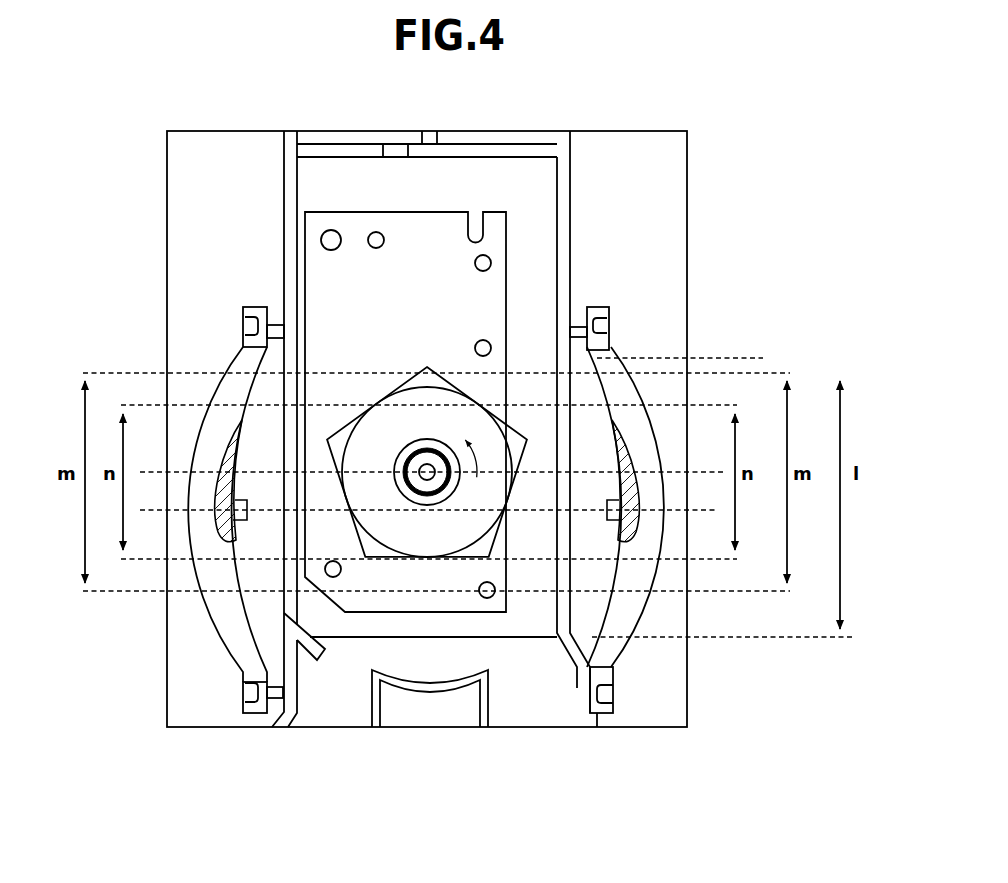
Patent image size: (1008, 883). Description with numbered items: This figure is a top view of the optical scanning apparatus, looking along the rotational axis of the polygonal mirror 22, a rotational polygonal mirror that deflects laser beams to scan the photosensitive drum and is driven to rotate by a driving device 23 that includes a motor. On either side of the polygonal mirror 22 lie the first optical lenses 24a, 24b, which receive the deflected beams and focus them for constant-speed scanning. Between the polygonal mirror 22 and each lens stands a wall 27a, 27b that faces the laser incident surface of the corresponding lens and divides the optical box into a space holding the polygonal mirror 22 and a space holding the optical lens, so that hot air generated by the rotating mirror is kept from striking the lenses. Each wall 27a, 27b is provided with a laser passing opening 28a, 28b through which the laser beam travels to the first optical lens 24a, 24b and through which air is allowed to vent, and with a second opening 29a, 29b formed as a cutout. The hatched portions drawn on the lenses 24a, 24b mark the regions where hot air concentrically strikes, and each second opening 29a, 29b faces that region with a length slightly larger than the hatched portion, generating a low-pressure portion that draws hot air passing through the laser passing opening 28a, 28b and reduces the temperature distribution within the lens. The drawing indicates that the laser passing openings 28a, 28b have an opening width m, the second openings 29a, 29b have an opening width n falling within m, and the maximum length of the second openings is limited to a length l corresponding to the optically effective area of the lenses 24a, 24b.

The polygonal mirror 22 is at (457, 558).
The driving device 23 is at (353, 595).
The first optical lens 24a is at (232, 635).
The first optical lens 24b is at (600, 667).
The wall 27a is at (287, 221).
The wall 27b is at (562, 258).
The laser passing opening 28a is at (285, 385).
The laser passing opening 28b is at (562, 393).
The second opening 29a is at (287, 415).
The second opening 29b is at (563, 427).